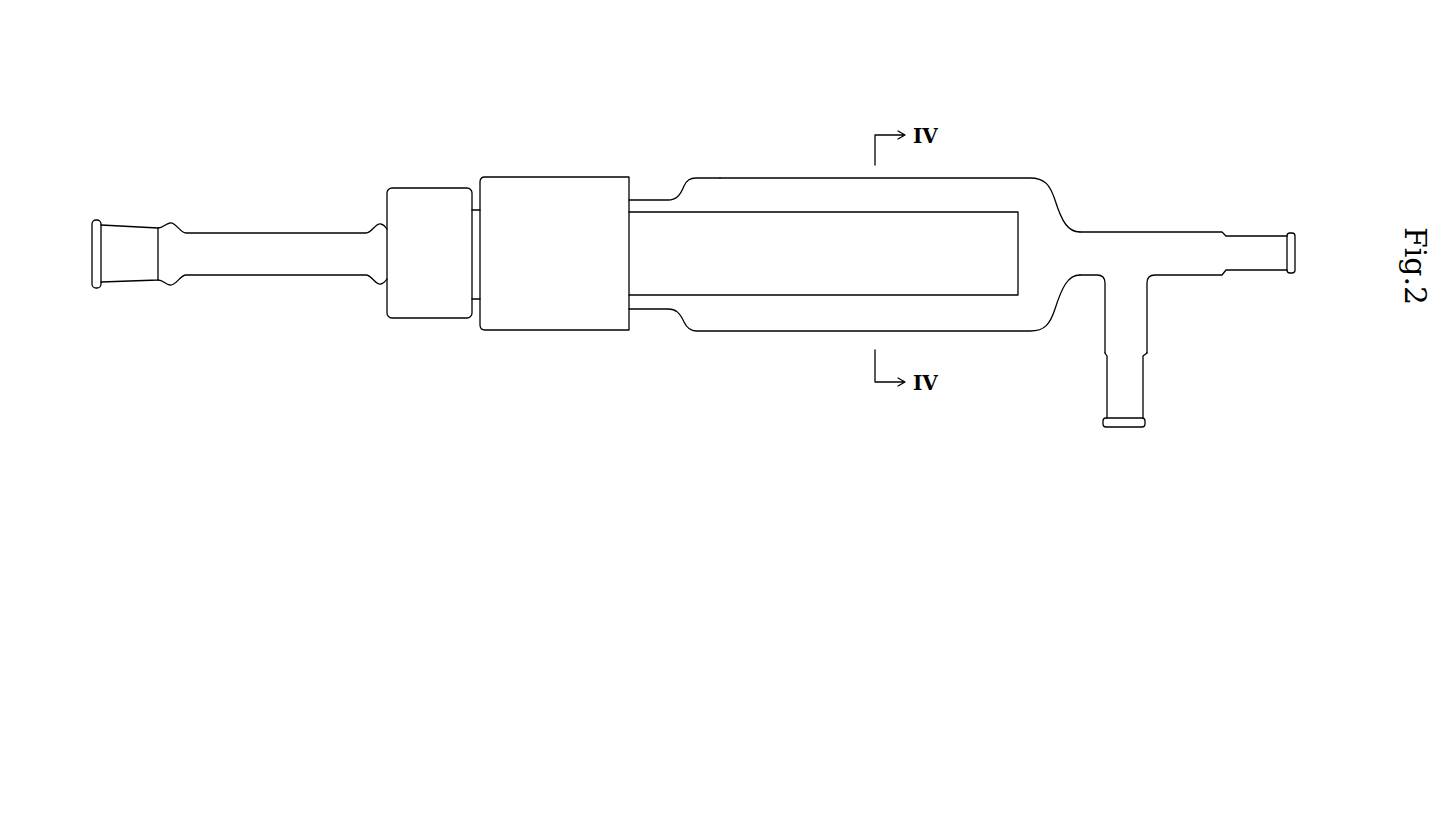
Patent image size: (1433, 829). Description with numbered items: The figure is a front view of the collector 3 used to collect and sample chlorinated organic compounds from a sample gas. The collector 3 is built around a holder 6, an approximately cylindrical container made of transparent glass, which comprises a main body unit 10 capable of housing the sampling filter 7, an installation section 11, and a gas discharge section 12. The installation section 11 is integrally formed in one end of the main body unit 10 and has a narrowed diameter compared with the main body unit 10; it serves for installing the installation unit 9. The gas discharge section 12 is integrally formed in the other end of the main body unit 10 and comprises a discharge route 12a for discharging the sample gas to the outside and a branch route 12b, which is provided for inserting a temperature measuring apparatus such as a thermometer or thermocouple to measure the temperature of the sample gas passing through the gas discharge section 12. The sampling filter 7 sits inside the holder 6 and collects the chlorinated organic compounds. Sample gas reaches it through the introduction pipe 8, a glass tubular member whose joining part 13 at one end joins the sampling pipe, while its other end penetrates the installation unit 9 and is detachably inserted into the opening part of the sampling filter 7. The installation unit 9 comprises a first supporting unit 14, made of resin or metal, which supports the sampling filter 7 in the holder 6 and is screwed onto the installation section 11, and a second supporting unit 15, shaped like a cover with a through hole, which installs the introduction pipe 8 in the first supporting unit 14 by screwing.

The collector 3 is at (975, 239).
The holder 6 is at (991, 182).
The sampling filter 7 is at (965, 267).
The introduction pipe 8 is at (278, 265).
The installation unit 9 is at (508, 242).
The main body unit 10 is at (798, 319).
The installation section 11 is at (635, 203).
The gas discharge section 12 is at (1201, 274).
The discharge route 12a is at (1260, 242).
The branch route 12b is at (1128, 390).
The joining part 13 is at (130, 240).
The first supporting unit 14 is at (563, 305).
The second supporting unit 15 is at (433, 308).